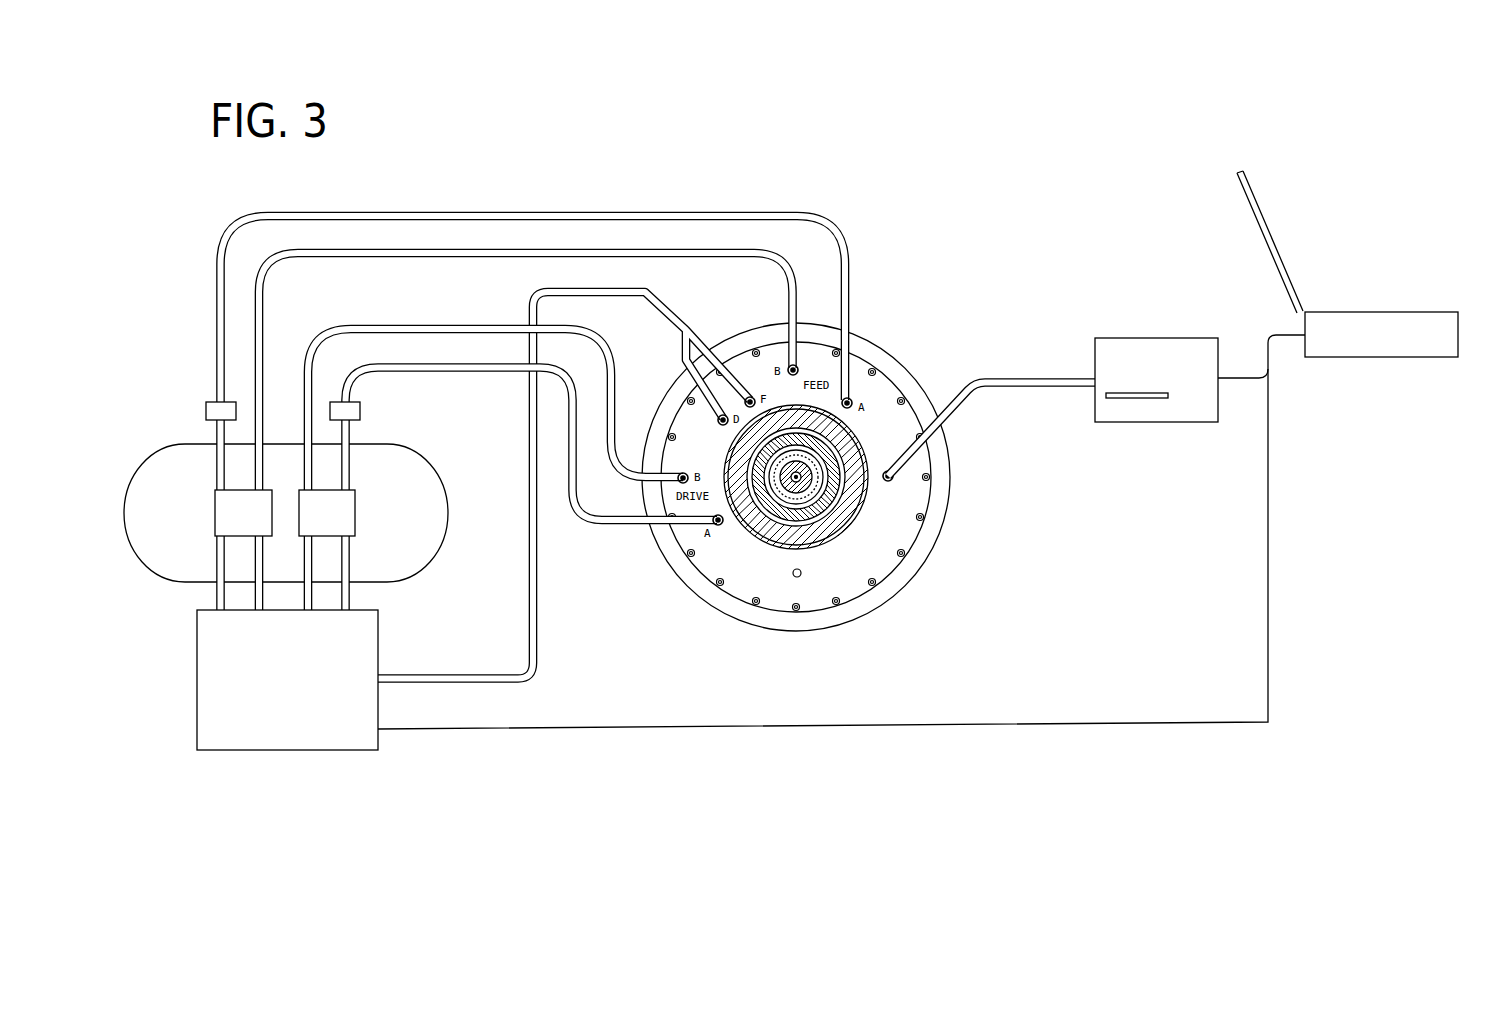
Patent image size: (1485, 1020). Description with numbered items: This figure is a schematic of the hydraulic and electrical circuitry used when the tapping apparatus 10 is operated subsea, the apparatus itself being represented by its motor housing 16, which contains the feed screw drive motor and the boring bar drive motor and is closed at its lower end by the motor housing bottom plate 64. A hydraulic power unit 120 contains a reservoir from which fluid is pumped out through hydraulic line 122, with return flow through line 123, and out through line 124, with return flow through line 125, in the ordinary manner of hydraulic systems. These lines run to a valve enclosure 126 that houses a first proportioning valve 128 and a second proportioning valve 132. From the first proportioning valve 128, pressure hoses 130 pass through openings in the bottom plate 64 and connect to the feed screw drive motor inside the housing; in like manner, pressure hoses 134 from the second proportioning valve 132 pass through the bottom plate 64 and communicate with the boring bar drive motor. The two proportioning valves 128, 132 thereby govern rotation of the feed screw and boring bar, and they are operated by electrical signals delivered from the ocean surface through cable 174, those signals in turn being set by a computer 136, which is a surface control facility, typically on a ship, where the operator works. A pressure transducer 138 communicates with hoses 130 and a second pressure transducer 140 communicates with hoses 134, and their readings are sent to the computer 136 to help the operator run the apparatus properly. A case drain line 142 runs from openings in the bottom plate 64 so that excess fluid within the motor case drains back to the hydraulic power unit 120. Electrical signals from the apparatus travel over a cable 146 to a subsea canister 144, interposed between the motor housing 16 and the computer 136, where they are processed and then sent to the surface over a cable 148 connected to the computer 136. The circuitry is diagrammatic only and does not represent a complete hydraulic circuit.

The tapping apparatus 10 is at (631, 630).
The motor housing 16 is at (862, 357).
The motor housing bottom plate 64 is at (845, 577).
The hydraulic power unit 120 is at (210, 705).
The hydraulic line 122 is at (263, 593).
The return line 123 is at (222, 560).
The hydraulic line 124 is at (313, 592).
The return line 125 is at (348, 572).
The valve enclosure 126 is at (153, 458).
The first proportioning valve 128 is at (230, 500).
The pressure hoses 130 is at (257, 312).
The second proportioning valve 132 is at (350, 515).
The pressure hoses 134 is at (468, 327).
The computer 136 is at (1348, 318).
The pressure transducer 138 is at (206, 410).
The pressure transducer 140 is at (353, 409).
The case drain line 142 is at (532, 543).
The subsea canister 144 is at (1158, 350).
The cable 146 is at (1023, 383).
The cable 148 is at (1265, 355).
The cable 174 is at (1090, 721).